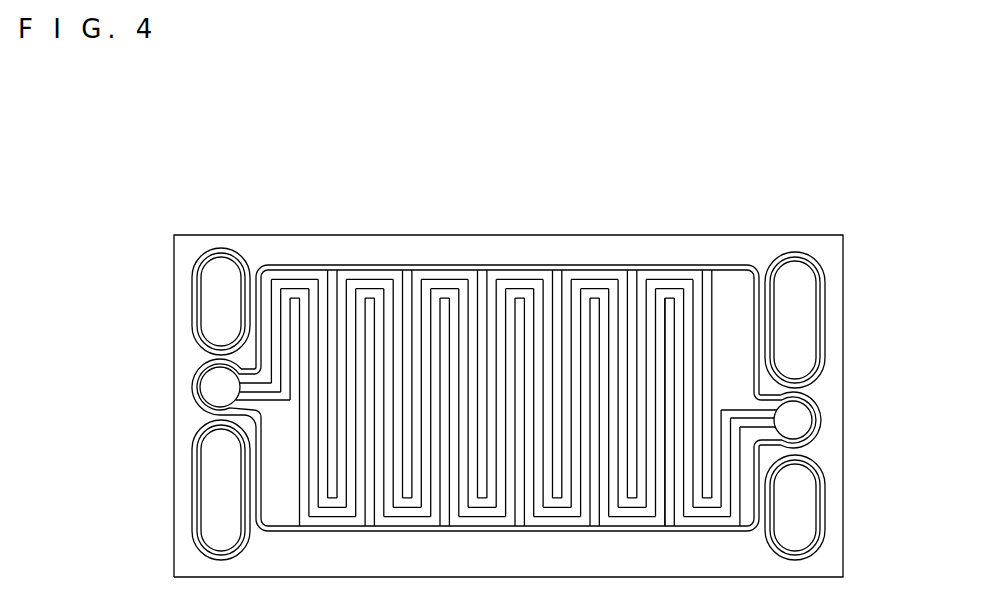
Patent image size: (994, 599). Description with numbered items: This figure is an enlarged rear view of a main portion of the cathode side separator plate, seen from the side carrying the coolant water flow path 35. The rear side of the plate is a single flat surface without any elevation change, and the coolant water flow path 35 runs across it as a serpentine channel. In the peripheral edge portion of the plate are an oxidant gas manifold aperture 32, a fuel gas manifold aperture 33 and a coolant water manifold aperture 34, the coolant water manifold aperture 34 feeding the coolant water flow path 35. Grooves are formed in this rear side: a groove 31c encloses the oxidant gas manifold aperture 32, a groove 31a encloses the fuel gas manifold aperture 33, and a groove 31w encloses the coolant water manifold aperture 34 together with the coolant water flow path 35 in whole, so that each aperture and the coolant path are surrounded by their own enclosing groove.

The groove 31a is at (810, 532).
The groove 31c is at (828, 265).
The groove 31w is at (490, 268).
The oxidant gas manifold aperture 32 is at (215, 478).
The fuel gas manifold aperture 33 is at (214, 297).
The coolant water manifold aperture 34 is at (222, 383).
The coolant water flow path 35 is at (665, 290).